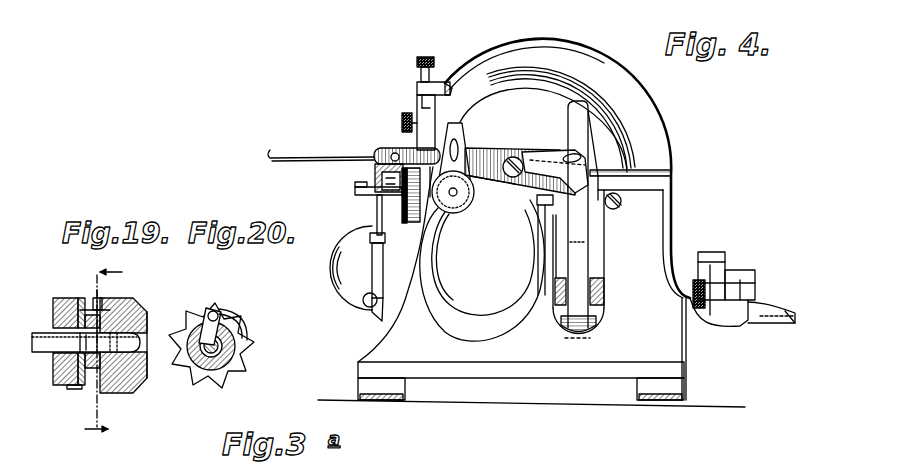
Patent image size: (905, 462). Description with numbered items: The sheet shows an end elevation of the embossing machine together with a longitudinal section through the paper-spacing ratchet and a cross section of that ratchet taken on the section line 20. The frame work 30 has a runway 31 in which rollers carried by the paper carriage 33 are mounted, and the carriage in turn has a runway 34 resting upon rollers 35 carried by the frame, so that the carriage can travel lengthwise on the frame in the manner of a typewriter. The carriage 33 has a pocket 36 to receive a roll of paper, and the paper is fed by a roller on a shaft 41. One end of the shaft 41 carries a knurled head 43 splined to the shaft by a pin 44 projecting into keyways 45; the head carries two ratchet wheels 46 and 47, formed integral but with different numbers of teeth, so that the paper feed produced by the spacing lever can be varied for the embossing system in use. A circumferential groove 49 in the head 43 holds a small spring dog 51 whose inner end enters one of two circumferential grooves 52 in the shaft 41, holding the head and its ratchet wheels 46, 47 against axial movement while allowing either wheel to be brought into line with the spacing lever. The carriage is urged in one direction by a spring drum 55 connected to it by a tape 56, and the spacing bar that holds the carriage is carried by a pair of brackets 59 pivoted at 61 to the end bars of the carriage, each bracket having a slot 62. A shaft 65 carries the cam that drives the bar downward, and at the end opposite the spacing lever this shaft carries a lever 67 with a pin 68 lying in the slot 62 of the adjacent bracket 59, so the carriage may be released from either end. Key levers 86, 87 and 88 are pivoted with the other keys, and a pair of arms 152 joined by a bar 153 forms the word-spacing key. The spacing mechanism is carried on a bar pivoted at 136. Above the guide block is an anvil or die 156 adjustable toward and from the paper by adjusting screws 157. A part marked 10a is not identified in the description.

In FIG. 4, the frame work 30 is at (378, 340).
In FIG. 4, the runway 31 is at (540, 202).
In FIG. 4, the paper carriage 33 is at (480, 152).
In FIG. 4, the runway 34 is at (378, 152).
In FIG. 4, the rollers 35 is at (375, 195).
In FIG. 4, the pocket 36 is at (485, 303).
In FIG. 4, the shaft 41 is at (455, 197).
In FIG. 19, the shaft 41 is at (53, 333).
In FIG. 20, the shaft 41 is at (218, 349).
In FIG. 19, the knurled head 43 is at (147, 320).
In FIG. 20, the knurled head 43 is at (211, 346).
In FIG. 19, the pin 44 is at (110, 360).
In FIG. 19, the keyways 45 is at (138, 340).
In FIG. 20, the keyways 45 is at (218, 364).
In FIG. 19, the ratchet wheel 46 is at (63, 297).
In FIG. 20, the ratchet wheel 46 is at (248, 328).
In FIG. 19, the ratchet wheel 47 is at (80, 297).
In FIG. 20, the ratchet wheel 47 is at (193, 322).
In FIG. 19, the circumferential groove 49 is at (115, 313).
In FIG. 19, the spring dog 51 is at (97, 303).
In FIG. 20, the spring dog 51 is at (235, 309).
In FIG. 19, the circumferential grooves 52 is at (62, 363).
In FIG. 20, the circumferential grooves 52 is at (222, 342).
In FIG. 4, the spring drum 55 is at (594, 267).
In FIG. 4, the tape 56 is at (580, 234).
In FIG. 4, the bracket 59 is at (513, 157).
In FIG. 4, the pivot 61 is at (490, 180).
In FIG. 4, the slot 62 is at (472, 200).
In FIG. 4, the shaft 65 is at (607, 172).
In FIG. 4, the lever 67 is at (580, 134).
In FIG. 4, the pin 68 is at (575, 150).
In FIG. 4, the key lever 86 is at (727, 288).
In FIG. 4, the key lever 87 is at (753, 272).
In FIG. 4, the key lever 88 is at (722, 257).
In FIG. 4, the frame part 10a is at (600, 192).
In FIG. 4, the pivot 136 is at (622, 202).
In FIG. 4, the arms 152 is at (760, 316).
In FIG. 4, the bar 153 is at (788, 323).
In FIG. 4, the anvil or die 156 is at (417, 106).
In FIG. 4, the adjusting screws 157 is at (428, 56).
In FIG. 19, the section line 20 is at (105, 353).